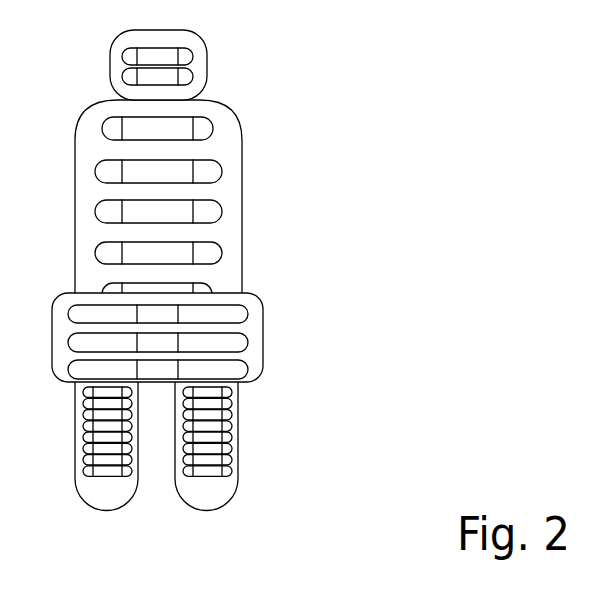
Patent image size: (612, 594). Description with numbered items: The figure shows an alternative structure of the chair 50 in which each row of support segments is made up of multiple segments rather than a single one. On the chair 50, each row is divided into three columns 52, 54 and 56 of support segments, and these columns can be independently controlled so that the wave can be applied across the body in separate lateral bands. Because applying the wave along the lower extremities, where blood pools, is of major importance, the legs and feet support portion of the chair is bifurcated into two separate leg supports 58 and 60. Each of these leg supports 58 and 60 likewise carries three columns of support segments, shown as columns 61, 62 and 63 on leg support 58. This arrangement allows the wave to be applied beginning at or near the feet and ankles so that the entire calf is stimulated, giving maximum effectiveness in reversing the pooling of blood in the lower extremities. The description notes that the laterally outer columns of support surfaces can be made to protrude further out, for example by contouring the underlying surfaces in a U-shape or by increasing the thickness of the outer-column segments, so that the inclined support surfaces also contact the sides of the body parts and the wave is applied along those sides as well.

The chair 50 is at (157, 202).
The column of support segments 52 is at (212, 215).
The column of support segments 54 is at (173, 205).
The column of support segments 56 is at (105, 210).
The leg support 58 is at (218, 444).
The leg support 60 is at (77, 475).
The column of support segments 61 is at (228, 440).
The column of support segments 62 is at (205, 440).
The column of support segments 63 is at (187, 437).